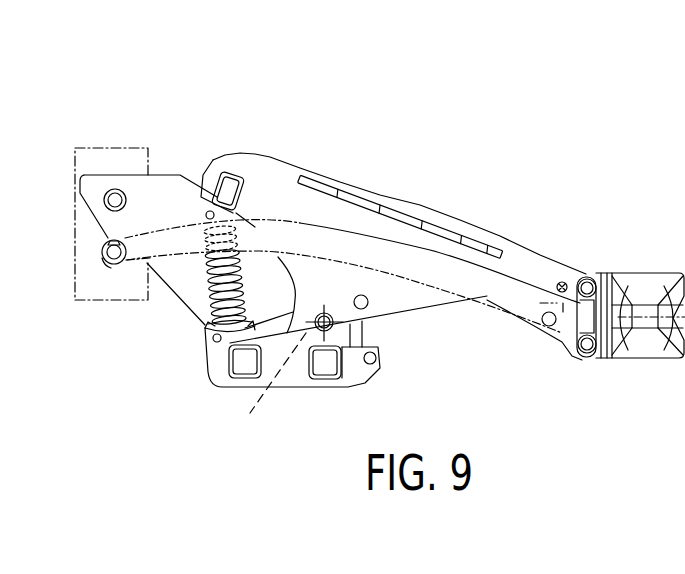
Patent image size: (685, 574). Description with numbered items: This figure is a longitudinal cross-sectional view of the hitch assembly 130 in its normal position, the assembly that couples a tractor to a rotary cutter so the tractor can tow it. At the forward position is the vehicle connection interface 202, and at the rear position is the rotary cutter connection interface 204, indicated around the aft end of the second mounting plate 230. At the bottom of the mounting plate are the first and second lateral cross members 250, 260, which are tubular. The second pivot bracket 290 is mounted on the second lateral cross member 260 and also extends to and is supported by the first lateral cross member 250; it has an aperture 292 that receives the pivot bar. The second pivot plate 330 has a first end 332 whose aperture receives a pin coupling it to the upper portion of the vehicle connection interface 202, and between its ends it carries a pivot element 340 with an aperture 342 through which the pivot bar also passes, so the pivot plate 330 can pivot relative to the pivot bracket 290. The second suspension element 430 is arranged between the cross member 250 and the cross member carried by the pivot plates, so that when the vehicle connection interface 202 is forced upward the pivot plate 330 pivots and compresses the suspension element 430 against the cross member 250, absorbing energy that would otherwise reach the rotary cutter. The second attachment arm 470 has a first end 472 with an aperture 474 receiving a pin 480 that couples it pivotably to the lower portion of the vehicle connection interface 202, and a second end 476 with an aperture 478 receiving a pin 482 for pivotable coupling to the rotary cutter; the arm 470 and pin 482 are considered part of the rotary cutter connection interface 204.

The hitch assembly 130 is at (383, 148).
The vehicle connection interface 202 is at (643, 269).
The rotary cutter connection interface 204 is at (110, 170).
The second mounting plate 230 is at (167, 192).
The first lateral cross member 250 is at (244, 364).
The second lateral cross member 260 is at (328, 364).
The second pivot bracket 290 is at (297, 352).
The aperture 292 is at (261, 394).
The second pivot plate 330 is at (440, 217).
The first end 332 is at (560, 270).
The pivot element 340 is at (390, 303).
The aperture 342 is at (318, 317).
The second suspension element 430 is at (215, 291).
The second attachment arm 470 is at (488, 292).
The first end 472 is at (562, 338).
The aperture 474 is at (577, 353).
The second end 476 is at (138, 260).
The aperture 478 is at (107, 268).
The pin 480 is at (590, 347).
The pin 482 is at (122, 250).